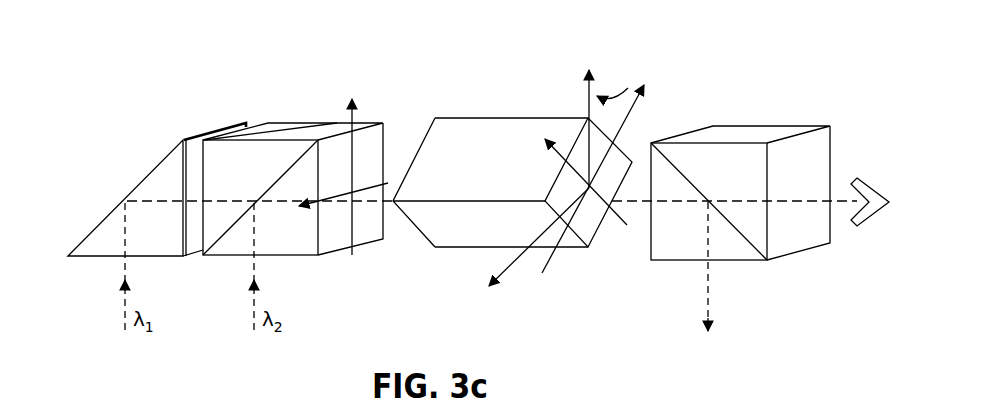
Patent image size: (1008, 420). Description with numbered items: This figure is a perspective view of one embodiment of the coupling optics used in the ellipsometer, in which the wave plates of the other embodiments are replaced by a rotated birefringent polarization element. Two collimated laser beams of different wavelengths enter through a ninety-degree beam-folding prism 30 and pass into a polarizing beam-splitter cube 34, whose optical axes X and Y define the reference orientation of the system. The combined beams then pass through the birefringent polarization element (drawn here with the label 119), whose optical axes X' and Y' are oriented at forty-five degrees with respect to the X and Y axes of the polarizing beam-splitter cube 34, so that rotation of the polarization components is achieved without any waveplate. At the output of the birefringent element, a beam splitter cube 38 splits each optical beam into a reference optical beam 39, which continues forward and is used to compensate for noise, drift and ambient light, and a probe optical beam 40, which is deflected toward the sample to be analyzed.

The beam-folding prism 30 is at (183, 140).
The polarizing beam-splitter cube 34 is at (313, 122).
The beam-shaping prism element (BPE) 119 is at (448, 249).
The beam splitter cube 38 is at (733, 262).
The reference optical beam 39 is at (842, 205).
The probe optical beam 40 is at (708, 306).